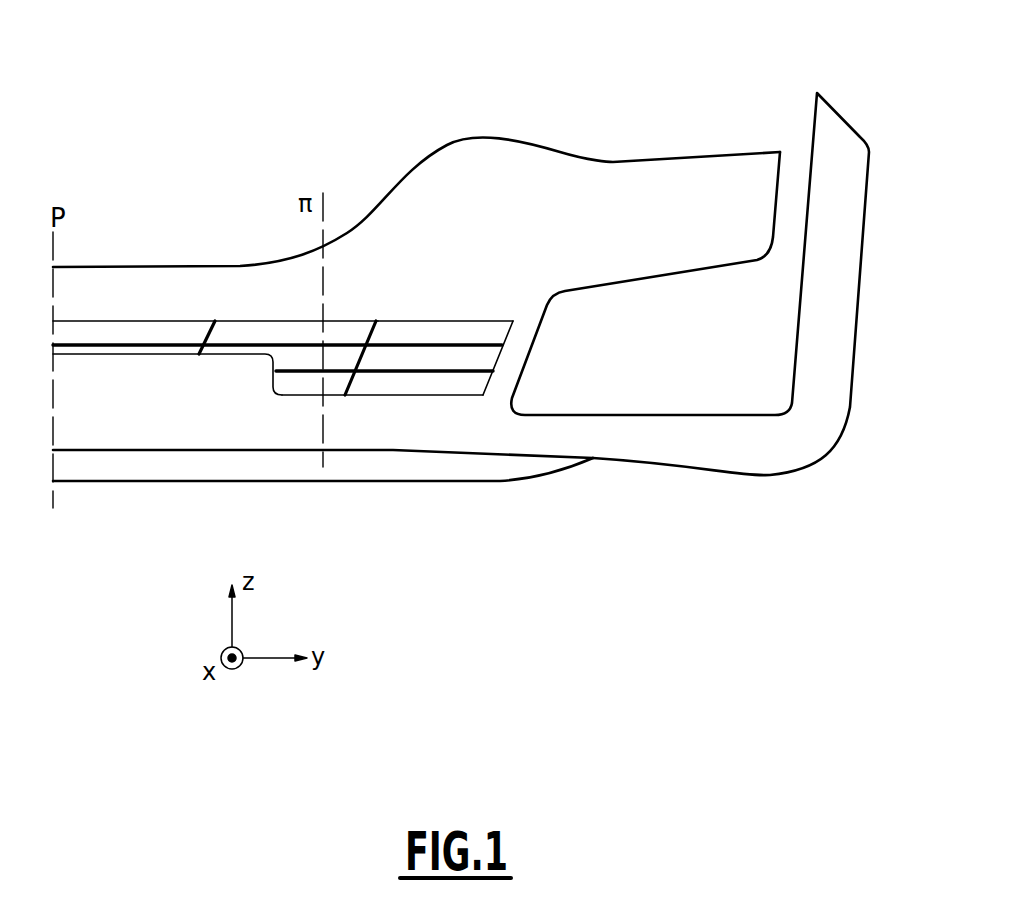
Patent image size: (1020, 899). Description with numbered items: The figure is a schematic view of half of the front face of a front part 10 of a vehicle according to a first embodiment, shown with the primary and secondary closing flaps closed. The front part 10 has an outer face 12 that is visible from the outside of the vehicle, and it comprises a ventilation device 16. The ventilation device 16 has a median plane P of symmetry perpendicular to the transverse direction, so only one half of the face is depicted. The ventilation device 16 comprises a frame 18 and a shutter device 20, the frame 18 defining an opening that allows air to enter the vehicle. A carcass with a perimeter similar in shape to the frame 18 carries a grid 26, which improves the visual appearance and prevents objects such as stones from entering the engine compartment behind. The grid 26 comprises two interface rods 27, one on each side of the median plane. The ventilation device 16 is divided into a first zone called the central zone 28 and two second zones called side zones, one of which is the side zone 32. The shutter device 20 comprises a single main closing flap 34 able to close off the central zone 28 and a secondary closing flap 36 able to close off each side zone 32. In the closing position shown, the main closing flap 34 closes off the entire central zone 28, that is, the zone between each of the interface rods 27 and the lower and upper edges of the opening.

The front part 10 is at (558, 82).
The outer face 12 is at (490, 177).
The ventilation device 16 is at (397, 293).
The frame 18 is at (465, 396).
The shutter device 20 is at (488, 333).
The grid 26 is at (247, 340).
The interface rods 27 is at (352, 380).
The central zone 28 is at (295, 385).
The side zone 32 is at (440, 384).
The main closing flap 34 is at (156, 332).
The secondary closing flap 36 is at (443, 335).